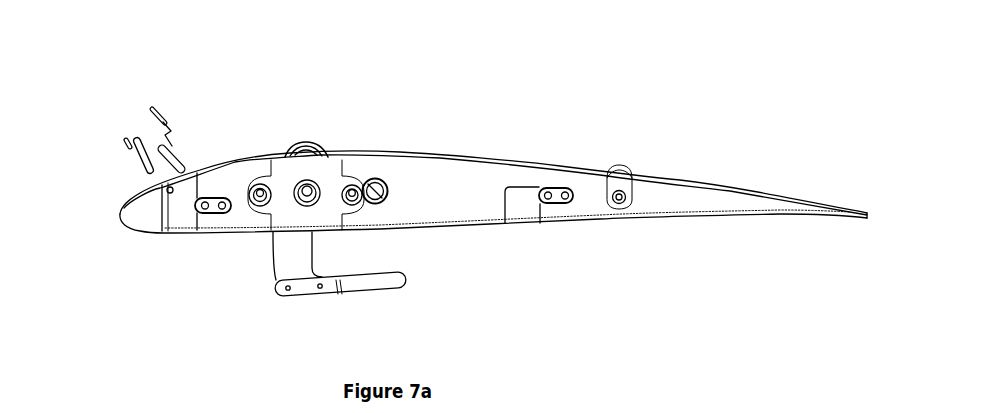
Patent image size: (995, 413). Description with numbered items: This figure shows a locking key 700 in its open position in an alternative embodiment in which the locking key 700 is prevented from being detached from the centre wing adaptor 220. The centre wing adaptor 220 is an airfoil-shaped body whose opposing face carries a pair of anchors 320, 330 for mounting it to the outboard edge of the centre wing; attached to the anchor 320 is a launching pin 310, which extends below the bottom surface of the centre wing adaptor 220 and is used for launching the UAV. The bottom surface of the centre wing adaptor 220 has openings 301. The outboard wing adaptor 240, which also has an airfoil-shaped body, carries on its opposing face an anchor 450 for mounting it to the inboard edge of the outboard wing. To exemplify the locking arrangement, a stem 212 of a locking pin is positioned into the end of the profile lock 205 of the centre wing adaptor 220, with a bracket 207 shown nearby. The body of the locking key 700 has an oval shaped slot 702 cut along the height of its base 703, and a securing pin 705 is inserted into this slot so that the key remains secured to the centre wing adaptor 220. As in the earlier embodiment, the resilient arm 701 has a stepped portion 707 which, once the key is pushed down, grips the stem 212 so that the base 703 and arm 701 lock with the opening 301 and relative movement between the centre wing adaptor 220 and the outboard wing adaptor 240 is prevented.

The locking key 700 is at (141, 159).
The resilient arm 701 is at (183, 165).
The oval shaped slot 702 is at (124, 135).
The base 703 is at (165, 160).
The securing pin 705 is at (168, 192).
The stepped portion 707 is at (163, 109).
The profile lock 205 is at (187, 195).
The rear bracket 207 is at (517, 186).
The stem 212 is at (208, 214).
The centre wing adaptor 220 is at (774, 186).
The outboard wing adaptor 240 is at (746, 214).
The opening 301 is at (177, 233).
The launching pin 310 is at (352, 296).
The anchor 320 is at (304, 142).
The anchor 330 is at (615, 168).
The anchor 450 is at (383, 201).